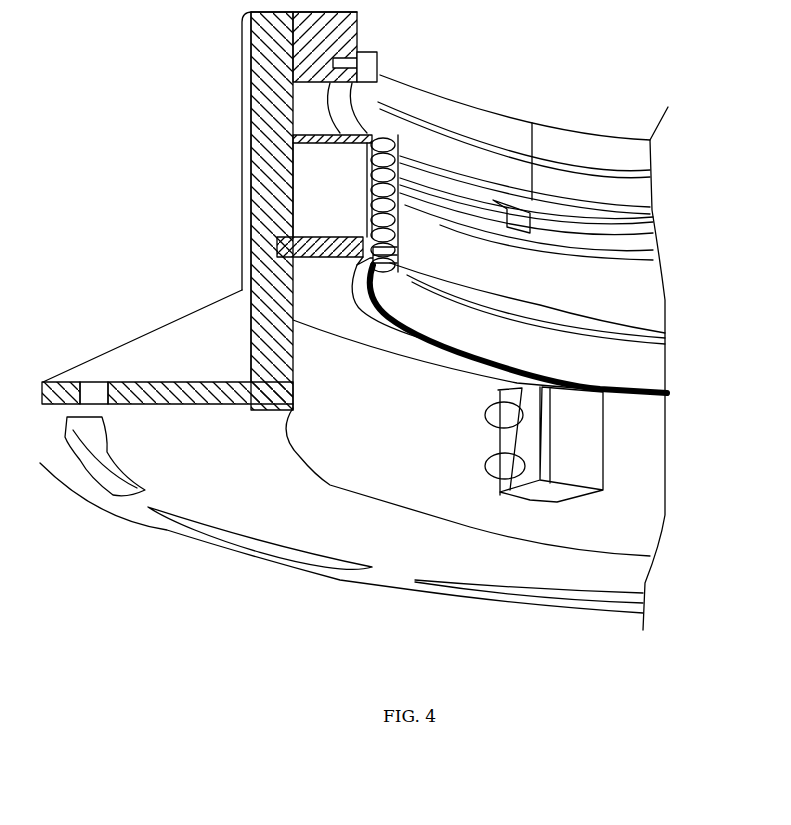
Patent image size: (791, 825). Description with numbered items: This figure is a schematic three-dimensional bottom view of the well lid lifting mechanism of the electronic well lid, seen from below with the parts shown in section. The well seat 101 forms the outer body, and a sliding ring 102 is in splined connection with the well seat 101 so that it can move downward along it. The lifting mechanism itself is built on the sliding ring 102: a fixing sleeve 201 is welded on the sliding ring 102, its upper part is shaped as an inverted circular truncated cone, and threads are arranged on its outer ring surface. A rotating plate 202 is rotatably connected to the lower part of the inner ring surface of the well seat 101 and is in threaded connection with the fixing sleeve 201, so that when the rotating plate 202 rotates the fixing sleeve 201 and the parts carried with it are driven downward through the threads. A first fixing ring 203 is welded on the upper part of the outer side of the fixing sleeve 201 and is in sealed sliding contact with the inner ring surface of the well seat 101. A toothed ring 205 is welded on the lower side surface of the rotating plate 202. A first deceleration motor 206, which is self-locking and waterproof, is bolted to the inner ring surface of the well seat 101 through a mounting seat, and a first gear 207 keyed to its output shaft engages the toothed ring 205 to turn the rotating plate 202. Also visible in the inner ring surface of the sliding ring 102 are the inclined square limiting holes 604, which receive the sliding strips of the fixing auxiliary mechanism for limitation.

The well seat 101 is at (257, 77).
The sliding ring 102 is at (297, 30).
The fixing sleeve 201 is at (388, 178).
The rotating plate 202 is at (293, 248).
The first fixing ring 203 is at (313, 162).
The toothed ring 205 is at (381, 275).
The first deceleration motor 206 is at (578, 465).
The first gear 207 is at (522, 388).
The square limiting holes 604 is at (522, 160).